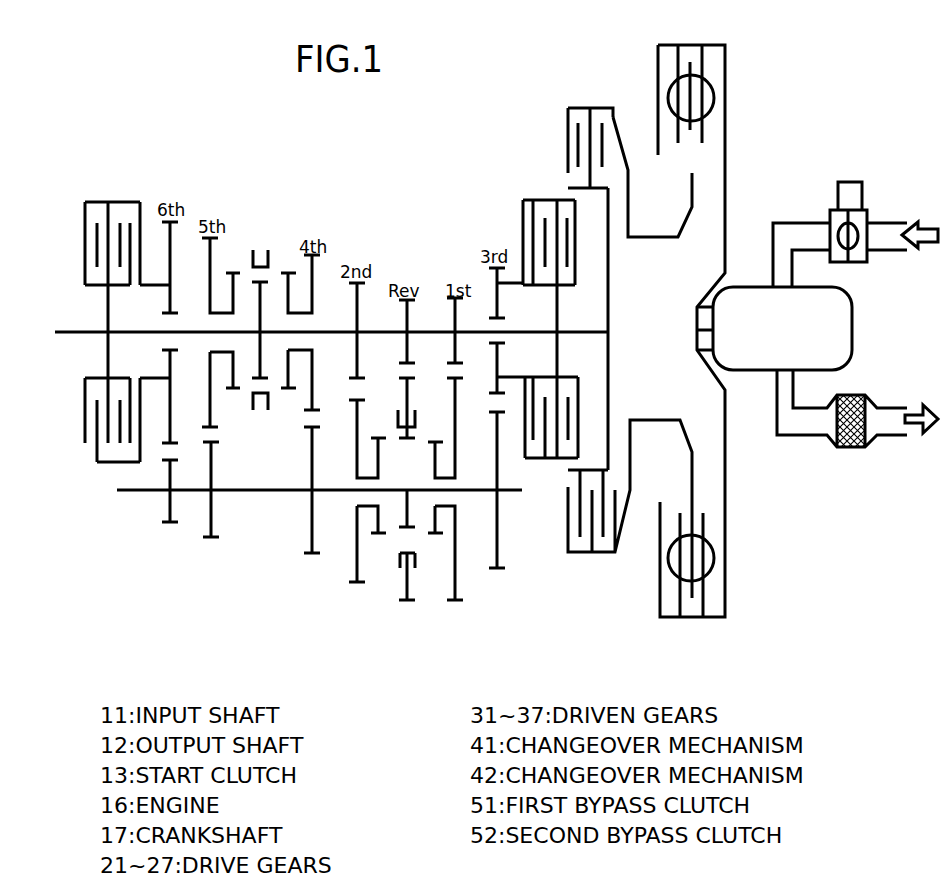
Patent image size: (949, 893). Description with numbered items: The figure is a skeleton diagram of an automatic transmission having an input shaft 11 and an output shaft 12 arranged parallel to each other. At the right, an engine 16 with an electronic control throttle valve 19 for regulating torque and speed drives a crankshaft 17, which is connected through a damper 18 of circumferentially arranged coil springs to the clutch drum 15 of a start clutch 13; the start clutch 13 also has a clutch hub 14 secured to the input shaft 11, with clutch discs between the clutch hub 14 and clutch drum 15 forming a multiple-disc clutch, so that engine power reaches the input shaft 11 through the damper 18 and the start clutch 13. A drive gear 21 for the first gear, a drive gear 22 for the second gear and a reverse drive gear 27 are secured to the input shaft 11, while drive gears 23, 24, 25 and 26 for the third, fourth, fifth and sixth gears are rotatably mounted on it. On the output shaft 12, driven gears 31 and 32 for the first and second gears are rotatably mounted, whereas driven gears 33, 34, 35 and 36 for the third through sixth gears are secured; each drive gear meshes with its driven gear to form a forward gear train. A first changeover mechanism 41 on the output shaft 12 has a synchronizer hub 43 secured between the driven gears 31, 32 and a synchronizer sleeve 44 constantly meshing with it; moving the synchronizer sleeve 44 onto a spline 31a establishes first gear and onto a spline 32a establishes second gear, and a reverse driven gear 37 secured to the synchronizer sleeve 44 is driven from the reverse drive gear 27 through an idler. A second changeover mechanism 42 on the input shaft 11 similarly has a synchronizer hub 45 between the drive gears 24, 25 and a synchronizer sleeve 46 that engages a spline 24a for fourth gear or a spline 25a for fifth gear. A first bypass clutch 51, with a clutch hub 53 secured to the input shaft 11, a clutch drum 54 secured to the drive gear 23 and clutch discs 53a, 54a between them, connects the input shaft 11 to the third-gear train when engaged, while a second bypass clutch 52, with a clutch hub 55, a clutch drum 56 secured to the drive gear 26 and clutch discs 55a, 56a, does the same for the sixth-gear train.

The input shaft 11 is at (600, 331).
The output shaft 12 is at (517, 493).
The start clutch 13 is at (561, 94).
The clutch hub 14 is at (608, 275).
The clutch drum 15 is at (600, 108).
The engine 16 is at (852, 325).
The crankshaft 17 is at (700, 334).
The damper 18 is at (715, 558).
The electronic control throttle valve 19 is at (869, 188).
The drive gear for the first gear 21 is at (455, 298).
The drive gear for the second gear 22 is at (360, 283).
The drive gear for the third gear 23 is at (490, 268).
The drive gear for the fourth gear 24 is at (318, 254).
The spline 24a is at (290, 272).
The drive gear for the fifth gear 25 is at (212, 238).
The spline 25a is at (233, 273).
The drive gear for the sixth gear 26 is at (170, 222).
The reverse drive gear 27 is at (408, 300).
The driven gear for the first gear 31 is at (455, 602).
The spline 31a is at (433, 438).
The driven gear for the second gear 32 is at (358, 583).
The spline 32a is at (378, 438).
The driven gear for the third gear 33 is at (497, 570).
The driven gear for the fourth gear 34 is at (312, 553).
The driven gear for the fifth gear 35 is at (211, 537).
The driven gear for the sixth gear 36 is at (170, 522).
The reverse driven gear 37 is at (407, 600).
The first changeover mechanism 41 is at (397, 587).
The second changeover mechanism 42 is at (260, 413).
The synchronizer hub 43 is at (415, 528).
The synchronizer sleeve 44 is at (400, 560).
The synchronizer hub 45 is at (267, 280).
The synchronizer sleeve 46 is at (265, 250).
The first bypass clutch 51 is at (549, 188).
The second bypass clutch 52 is at (76, 466).
The clutch hub 53 is at (568, 283).
The clutch discs 53a is at (580, 237).
The clutch drum 54 is at (535, 200).
The clutch discs 54a is at (568, 210).
The clutch hub 55 is at (85, 283).
The clutch discs 55a is at (85, 250).
The clutch drum 56 is at (108, 202).
The clutch discs 56a is at (85, 207).